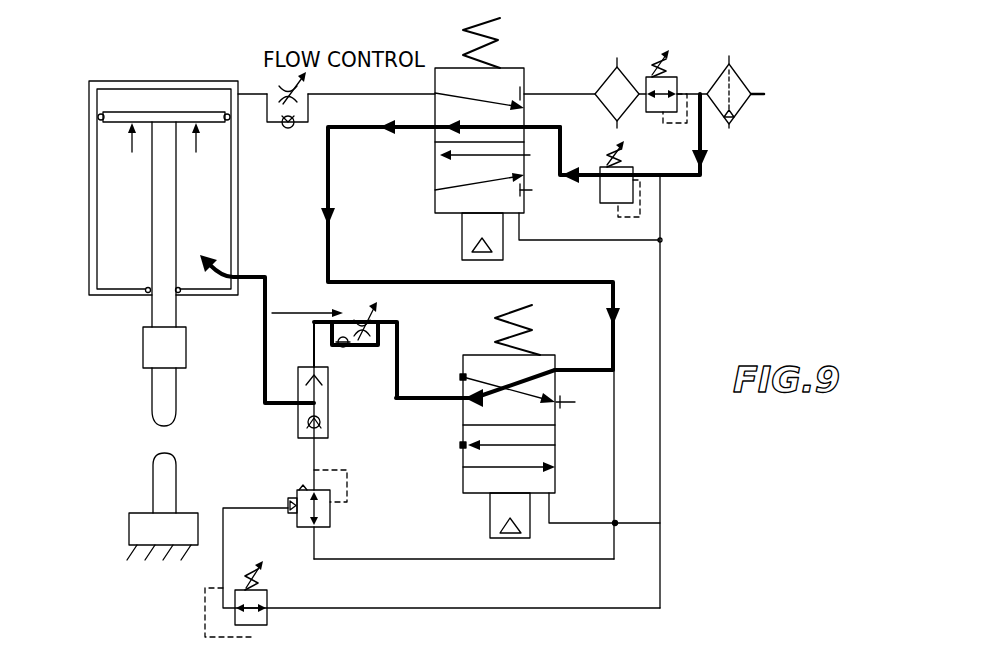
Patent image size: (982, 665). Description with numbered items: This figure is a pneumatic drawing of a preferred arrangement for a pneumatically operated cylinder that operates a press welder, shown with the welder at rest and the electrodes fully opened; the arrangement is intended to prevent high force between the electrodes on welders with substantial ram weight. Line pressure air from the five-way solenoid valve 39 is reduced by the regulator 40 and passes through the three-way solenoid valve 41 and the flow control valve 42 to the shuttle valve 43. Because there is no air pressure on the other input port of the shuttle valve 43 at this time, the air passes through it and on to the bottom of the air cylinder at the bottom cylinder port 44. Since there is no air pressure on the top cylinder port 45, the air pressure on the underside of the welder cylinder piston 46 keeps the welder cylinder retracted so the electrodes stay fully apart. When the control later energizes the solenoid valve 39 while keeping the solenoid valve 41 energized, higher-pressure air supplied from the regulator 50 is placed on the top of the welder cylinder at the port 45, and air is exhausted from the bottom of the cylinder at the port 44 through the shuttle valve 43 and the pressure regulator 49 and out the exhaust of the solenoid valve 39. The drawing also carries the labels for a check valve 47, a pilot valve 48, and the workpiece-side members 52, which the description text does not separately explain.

The 5-way solenoid valve 39 is at (510, 68).
The regulator 40 is at (602, 167).
The 3-way solenoid valve 41 is at (540, 355).
The flow control valve 42 is at (378, 346).
The shuttle valve 43 is at (304, 366).
The bottom cylinder port 44 is at (240, 272).
The top cylinder port 45 is at (252, 92).
The welder cylinder piston 46 is at (125, 112).
The check valve 47 is at (328, 362).
The pilot valve 48 is at (312, 441).
The pressure regulator 49 is at (308, 527).
The regulator 50 is at (677, 77).
The tool/workpiece holder 52 is at (153, 413).